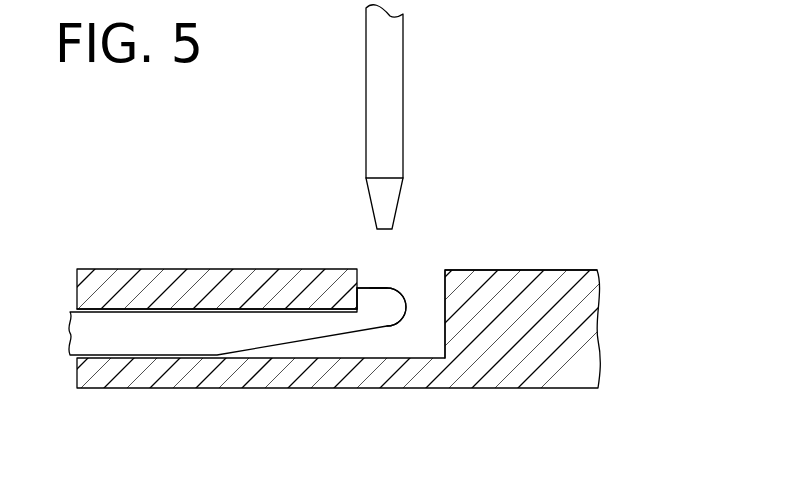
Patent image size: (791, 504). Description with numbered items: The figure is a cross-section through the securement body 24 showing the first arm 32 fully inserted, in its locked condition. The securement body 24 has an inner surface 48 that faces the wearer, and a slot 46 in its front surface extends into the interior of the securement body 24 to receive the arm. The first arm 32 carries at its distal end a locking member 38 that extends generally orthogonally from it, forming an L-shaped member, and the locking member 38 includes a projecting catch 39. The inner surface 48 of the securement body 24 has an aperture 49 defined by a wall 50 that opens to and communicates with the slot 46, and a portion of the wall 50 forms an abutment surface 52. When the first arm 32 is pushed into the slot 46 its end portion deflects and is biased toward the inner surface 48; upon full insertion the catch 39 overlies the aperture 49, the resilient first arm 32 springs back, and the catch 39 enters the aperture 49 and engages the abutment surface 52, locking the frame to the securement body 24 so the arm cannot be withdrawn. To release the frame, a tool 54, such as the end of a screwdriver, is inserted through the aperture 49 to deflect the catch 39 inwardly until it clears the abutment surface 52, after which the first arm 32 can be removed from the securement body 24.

The securement body 24 is at (312, 388).
The first arm 32 is at (85, 330).
The locking member 38 is at (385, 313).
The catch 39 is at (378, 287).
The slot 46 is at (76, 311).
The inner surface 48 is at (222, 269).
The aperture 49 is at (418, 291).
The wall 50 is at (445, 303).
The abutment surface 52 is at (367, 284).
The tool 54 is at (403, 105).